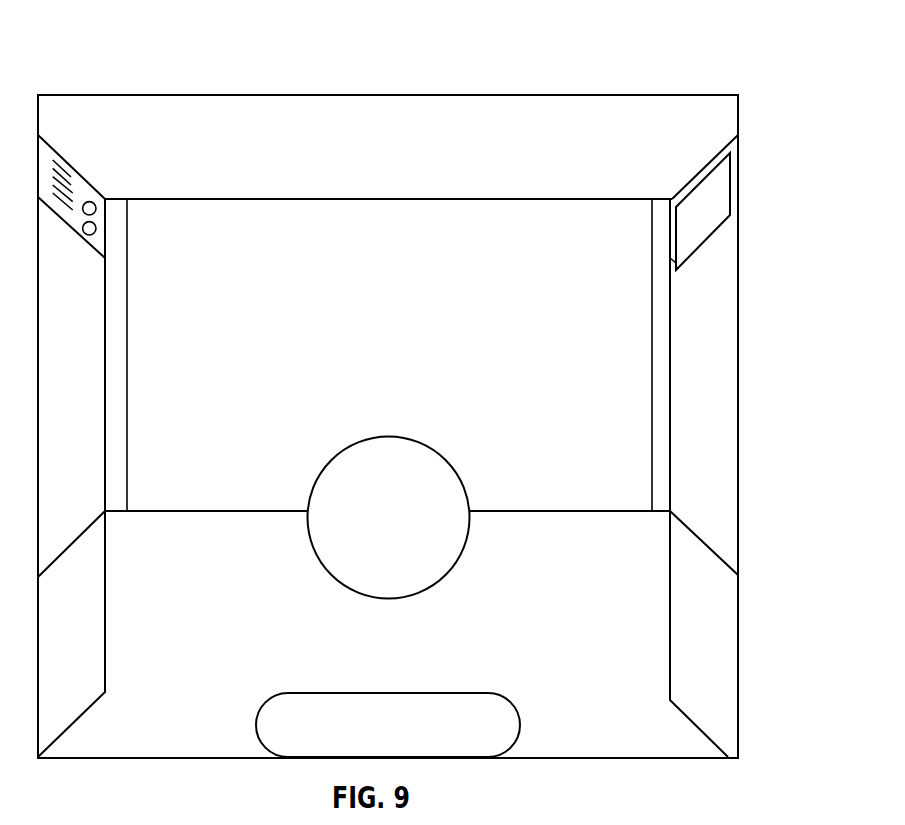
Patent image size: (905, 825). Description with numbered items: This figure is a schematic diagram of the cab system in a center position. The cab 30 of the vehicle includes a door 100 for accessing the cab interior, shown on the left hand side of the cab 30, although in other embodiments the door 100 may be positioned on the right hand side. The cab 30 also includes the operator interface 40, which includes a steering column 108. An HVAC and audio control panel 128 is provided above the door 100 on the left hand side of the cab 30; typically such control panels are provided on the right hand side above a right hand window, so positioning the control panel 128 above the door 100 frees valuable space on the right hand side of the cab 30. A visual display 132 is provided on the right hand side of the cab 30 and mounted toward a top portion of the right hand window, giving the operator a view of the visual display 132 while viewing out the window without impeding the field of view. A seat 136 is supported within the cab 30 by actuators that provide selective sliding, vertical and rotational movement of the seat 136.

The cab 30 is at (750, 68).
The operator interface 40 is at (527, 481).
The door 100 is at (95, 598).
The steering column 108 is at (428, 446).
The HVAC and audio control panel 128 is at (86, 190).
The visual display 132 is at (725, 182).
The seat 136 is at (458, 692).